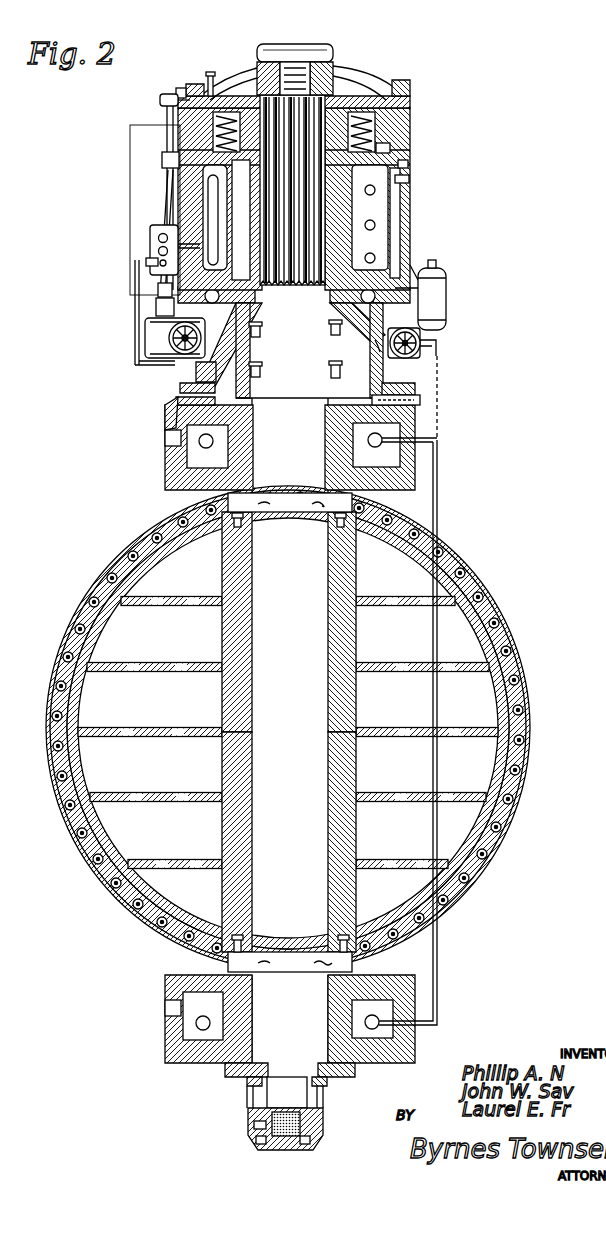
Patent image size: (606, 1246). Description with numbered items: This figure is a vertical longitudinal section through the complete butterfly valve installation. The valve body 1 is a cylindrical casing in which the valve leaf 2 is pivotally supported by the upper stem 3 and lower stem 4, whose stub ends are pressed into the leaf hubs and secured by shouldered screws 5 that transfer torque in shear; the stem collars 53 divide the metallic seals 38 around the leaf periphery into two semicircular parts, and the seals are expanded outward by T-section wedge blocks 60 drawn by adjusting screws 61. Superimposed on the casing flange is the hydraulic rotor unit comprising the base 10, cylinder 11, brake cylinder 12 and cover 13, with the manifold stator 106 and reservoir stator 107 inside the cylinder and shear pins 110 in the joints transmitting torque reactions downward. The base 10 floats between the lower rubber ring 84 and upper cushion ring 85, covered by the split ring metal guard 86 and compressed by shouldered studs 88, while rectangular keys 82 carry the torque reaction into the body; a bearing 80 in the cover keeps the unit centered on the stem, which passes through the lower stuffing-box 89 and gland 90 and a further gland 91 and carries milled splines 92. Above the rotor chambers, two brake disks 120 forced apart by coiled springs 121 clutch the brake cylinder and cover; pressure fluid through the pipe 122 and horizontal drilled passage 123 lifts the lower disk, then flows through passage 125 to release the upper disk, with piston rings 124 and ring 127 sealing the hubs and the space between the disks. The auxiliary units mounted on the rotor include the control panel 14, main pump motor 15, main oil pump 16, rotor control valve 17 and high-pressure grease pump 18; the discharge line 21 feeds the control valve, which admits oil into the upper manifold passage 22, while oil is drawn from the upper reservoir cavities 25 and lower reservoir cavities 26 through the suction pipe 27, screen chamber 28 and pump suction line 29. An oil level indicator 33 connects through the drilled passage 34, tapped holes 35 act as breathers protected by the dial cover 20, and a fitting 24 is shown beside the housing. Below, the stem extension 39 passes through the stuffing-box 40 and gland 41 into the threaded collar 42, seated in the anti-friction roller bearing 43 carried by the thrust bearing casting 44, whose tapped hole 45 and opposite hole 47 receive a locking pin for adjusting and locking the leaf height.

The valve body 1 is at (165, 462).
The valve leaf 2 is at (85, 838).
The upper stem 3 is at (292, 360).
The lower stem 4 is at (308, 931).
The shouldered screws 5 is at (246, 516).
The base 10 is at (379, 353).
The cylinder 11 is at (398, 236).
The brake cylinder 12 is at (410, 140).
The cover 13 is at (410, 101).
The control panel 14 is at (130, 148).
The main pump motor 15 is at (150, 330).
The main oil pump 16 is at (172, 340).
The rotor control valve 17 is at (150, 238).
The high-pressure grease pump 18 is at (437, 346).
The dial cover 20 is at (270, 48).
The discharge line 21 is at (137, 272).
The upper manifold passage 22 is at (406, 164).
The fitting 24 is at (165, 290).
The upper reservoir cavities 25 is at (246, 82).
The lower reservoir cavities 26 is at (258, 316).
The suction pipe 27 is at (206, 372).
The screen chamber 28 is at (148, 262).
The pump suction line 29 is at (158, 306).
The oil level indicator 33 is at (200, 86).
The drilled passage 34 is at (178, 93).
The tapped holes 35 is at (350, 86).
The metallic seals 38 is at (100, 580).
The stem extension 39 is at (300, 1098).
The stuffing-box 40 is at (327, 1083).
The gland 41 is at (324, 1088).
The threaded collar 42 is at (262, 1138).
The anti-friction roller bearing 43 is at (272, 1150).
The thrust bearing casting 44 is at (288, 1150).
The tapped hole 45 is at (324, 1126).
The opposite hole 47 is at (260, 1126).
The stem collars 53 is at (290, 732).
The wedge block 60 is at (215, 530).
The adjusting screws 61 is at (104, 618).
The bearing 80 is at (324, 54).
The rectangular keys 82 is at (414, 398).
The lower rubber ring 84 is at (172, 420).
The upper cushion ring 85 is at (178, 404).
The split ring metal guard 86 is at (182, 390).
The shouldered studs 88 is at (400, 368).
The lower stuffing-box 89 is at (336, 378).
The gland 90 is at (260, 372).
The gland 91 is at (260, 334).
The milled splines 92 is at (310, 288).
The manifold stator 106 is at (210, 218).
The reservoir stator 107 is at (365, 218).
The shear pins 110 is at (408, 170).
The brake disks 120 is at (386, 148).
The coiled springs 121 is at (368, 116).
The pipe 122 is at (168, 180).
The horizontal drilled passage 123 is at (165, 160).
The piston rings 124 is at (210, 74).
The passage 125 is at (212, 114).
The ring 127 is at (162, 104).